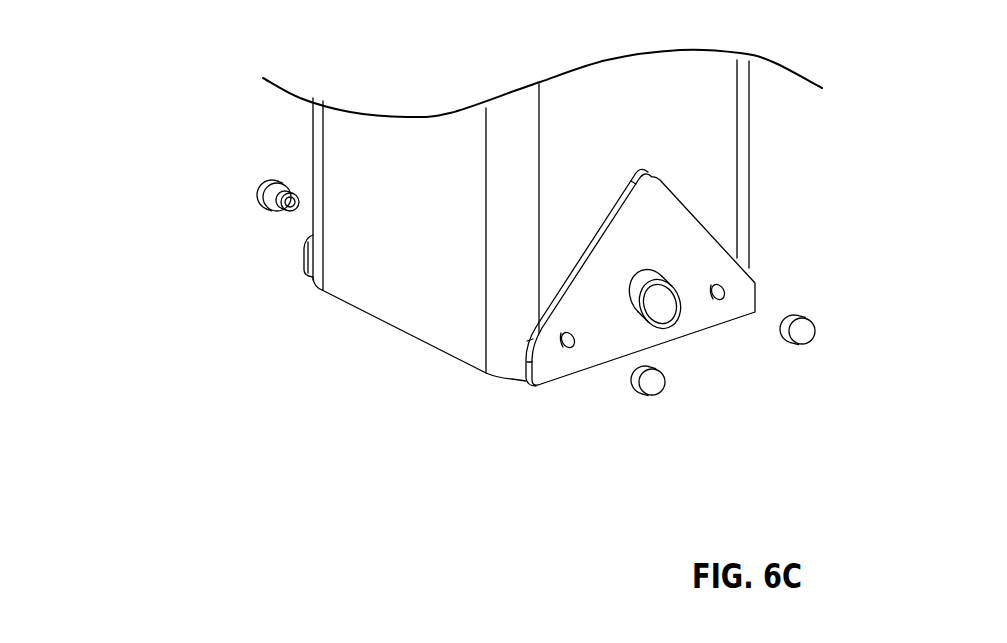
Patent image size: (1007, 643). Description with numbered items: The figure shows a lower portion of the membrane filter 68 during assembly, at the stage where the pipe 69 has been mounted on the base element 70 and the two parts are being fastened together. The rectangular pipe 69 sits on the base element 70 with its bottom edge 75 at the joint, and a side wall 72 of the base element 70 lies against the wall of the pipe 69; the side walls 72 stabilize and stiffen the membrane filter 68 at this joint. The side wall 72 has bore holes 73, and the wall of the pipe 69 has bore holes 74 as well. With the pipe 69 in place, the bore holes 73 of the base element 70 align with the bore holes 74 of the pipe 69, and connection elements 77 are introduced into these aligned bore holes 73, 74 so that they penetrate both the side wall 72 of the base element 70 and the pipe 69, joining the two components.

The membrane filter 68 is at (167, 81).
The pipe 69 is at (375, 268).
The base element 70 is at (781, 248).
The side wall 72 is at (542, 367).
The bore hole 73 is at (571, 343).
The bore hole 74 is at (724, 290).
The bottom edge 75 is at (417, 337).
The connection element 77 is at (277, 200).